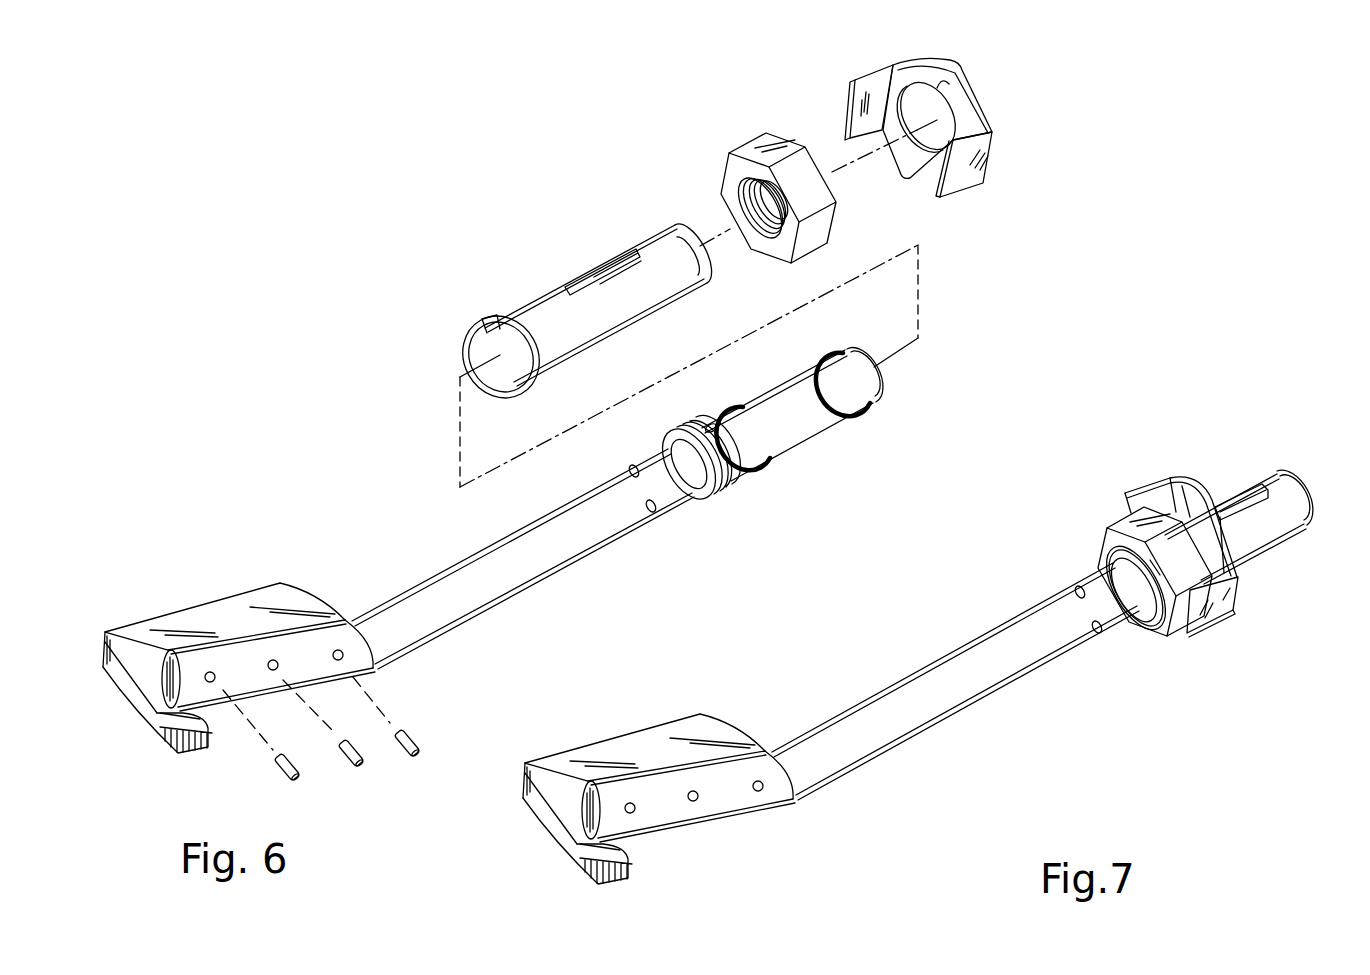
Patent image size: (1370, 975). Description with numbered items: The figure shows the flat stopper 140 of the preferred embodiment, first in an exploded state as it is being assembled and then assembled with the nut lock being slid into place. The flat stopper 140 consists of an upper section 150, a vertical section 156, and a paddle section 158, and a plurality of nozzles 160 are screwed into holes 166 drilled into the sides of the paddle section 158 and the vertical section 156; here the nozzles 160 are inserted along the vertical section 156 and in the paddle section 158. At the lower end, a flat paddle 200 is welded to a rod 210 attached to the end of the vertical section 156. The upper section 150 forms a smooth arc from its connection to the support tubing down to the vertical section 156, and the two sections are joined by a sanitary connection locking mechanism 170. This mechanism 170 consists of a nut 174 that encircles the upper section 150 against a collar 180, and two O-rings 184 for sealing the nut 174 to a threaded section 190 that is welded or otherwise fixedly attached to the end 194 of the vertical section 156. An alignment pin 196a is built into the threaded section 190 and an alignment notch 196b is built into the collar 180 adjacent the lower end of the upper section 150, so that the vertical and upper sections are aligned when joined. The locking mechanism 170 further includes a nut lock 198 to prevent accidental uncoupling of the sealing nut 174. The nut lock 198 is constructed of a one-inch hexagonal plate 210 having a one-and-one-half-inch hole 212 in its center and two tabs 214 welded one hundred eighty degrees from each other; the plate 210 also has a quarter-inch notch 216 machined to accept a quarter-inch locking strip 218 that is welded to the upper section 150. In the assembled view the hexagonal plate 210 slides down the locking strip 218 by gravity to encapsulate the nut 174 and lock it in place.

In FIG. 7, the flat stopper 140 is at (1054, 622).
In FIG. 6, the upper section 150 is at (581, 233).
In FIG. 7, the upper section 150 is at (1249, 514).
In FIG. 6, the vertical section 156 is at (548, 560).
In FIG. 7, the vertical section 156 is at (1037, 650).
In FIG. 7, the paddle section 158 is at (732, 777).
In FIG. 6, the nozzles 160 is at (420, 740).
In FIG. 6, the holes 166 is at (648, 508).
In FIG. 7, the holes 166 is at (1088, 609).
In FIG. 7, the sanitary connection locking mechanism 170 is at (1213, 571).
In FIG. 6, the nut 174 is at (760, 147).
In FIG. 7, the nut 174 is at (1177, 633).
In FIG. 6, the collar 180 is at (540, 291).
In FIG. 6, the O-rings 184 is at (858, 418).
In FIG. 6, the threaded section 190 is at (713, 502).
In FIG. 6, the end 194 is at (663, 452).
In FIG. 6, the alignment pin 196a is at (710, 426).
In FIG. 6, the alignment notch 196b is at (500, 317).
In FIG. 6, the nut lock 198 is at (936, 129).
In FIG. 7, the nut lock 198 is at (1152, 480).
In FIG. 6, the flat paddle 200 is at (203, 603).
In FIG. 7, the flat paddle 200 is at (644, 777).
In FIG. 6, the rod / hexagonal plate 210 is at (915, 77).
In FIG. 7, the rod / hexagonal plate 210 is at (688, 812).
In FIG. 6, the hole 212 is at (937, 120).
In FIG. 6, the tabs 214 is at (877, 87).
In FIG. 6, the notch 216 is at (945, 82).
In FIG. 6, the locking strip 218 is at (568, 290).
In FIG. 7, the locking strip 218 is at (1248, 497).